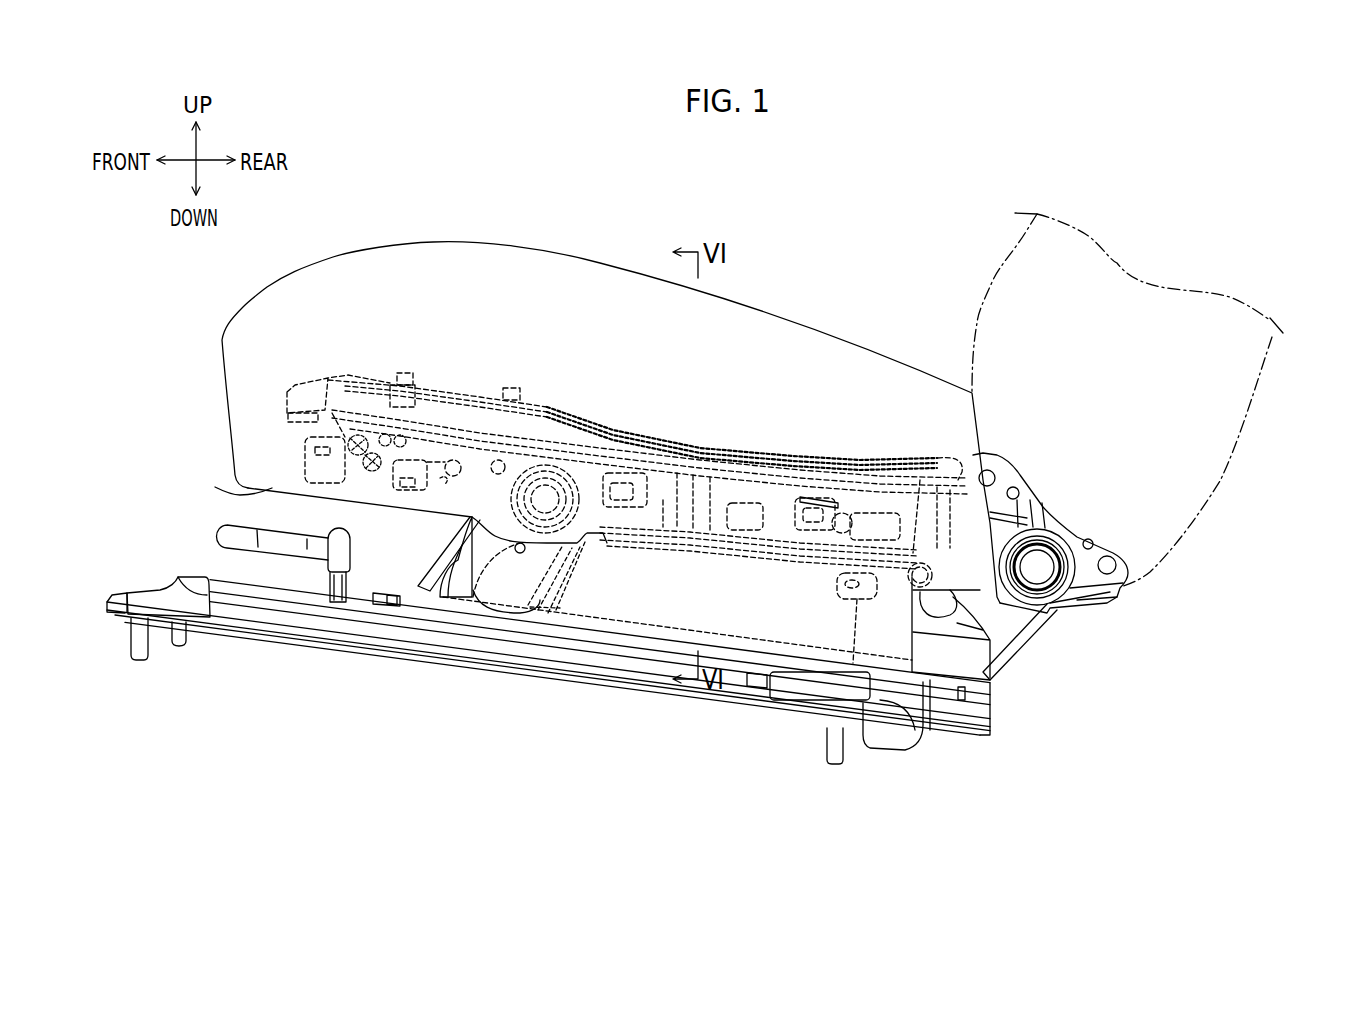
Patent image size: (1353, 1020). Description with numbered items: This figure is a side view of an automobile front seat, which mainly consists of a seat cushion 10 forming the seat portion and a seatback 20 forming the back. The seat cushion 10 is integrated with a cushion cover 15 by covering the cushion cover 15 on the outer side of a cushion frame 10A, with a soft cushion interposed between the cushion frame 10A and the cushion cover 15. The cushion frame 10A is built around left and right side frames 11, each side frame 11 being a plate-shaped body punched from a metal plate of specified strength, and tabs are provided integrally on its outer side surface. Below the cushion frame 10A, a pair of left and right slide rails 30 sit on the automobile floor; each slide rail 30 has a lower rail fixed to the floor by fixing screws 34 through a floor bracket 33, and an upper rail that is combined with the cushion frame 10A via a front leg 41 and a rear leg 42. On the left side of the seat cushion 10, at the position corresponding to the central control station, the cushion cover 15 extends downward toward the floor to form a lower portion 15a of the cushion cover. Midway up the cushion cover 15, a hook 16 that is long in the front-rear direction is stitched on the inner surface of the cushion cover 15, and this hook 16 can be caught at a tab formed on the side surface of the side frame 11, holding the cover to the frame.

The seat cushion 10 is at (404, 212).
The cushion frame 10A is at (548, 405).
The side frame 11 is at (748, 450).
The cushion cover 15 is at (233, 486).
The lower portion of the cushion cover 15a is at (455, 598).
The hook 16 is at (880, 462).
The seatback 20 is at (1262, 440).
The slide rail 30 is at (289, 656).
The floor bracket 33 is at (185, 593).
The fixing screw 34 is at (150, 643).
The front leg 41 is at (423, 547).
The rear leg 42 is at (1037, 637).